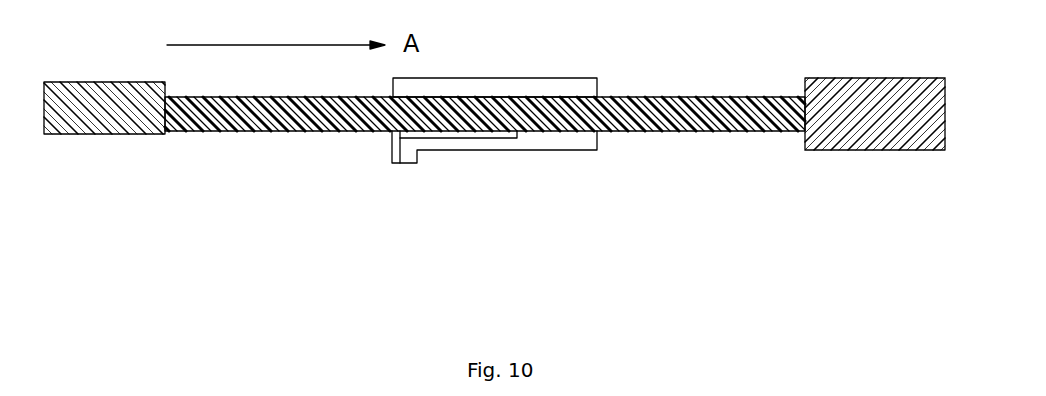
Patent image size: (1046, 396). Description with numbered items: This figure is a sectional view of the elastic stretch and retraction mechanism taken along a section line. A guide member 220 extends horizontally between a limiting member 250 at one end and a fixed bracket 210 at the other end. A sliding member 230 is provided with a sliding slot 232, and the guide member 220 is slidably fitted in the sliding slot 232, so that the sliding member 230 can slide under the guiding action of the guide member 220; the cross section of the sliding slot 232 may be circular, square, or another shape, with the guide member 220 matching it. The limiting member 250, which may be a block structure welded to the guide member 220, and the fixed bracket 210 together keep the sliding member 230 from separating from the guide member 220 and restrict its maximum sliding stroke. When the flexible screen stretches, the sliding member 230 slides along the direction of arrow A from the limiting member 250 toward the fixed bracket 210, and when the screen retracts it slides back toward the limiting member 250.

The fixed bracket 210 is at (850, 135).
The guide member 220 is at (333, 130).
The sliding member 230 is at (555, 140).
The sliding slot 232 is at (582, 97).
The limiting member 250 is at (132, 118).